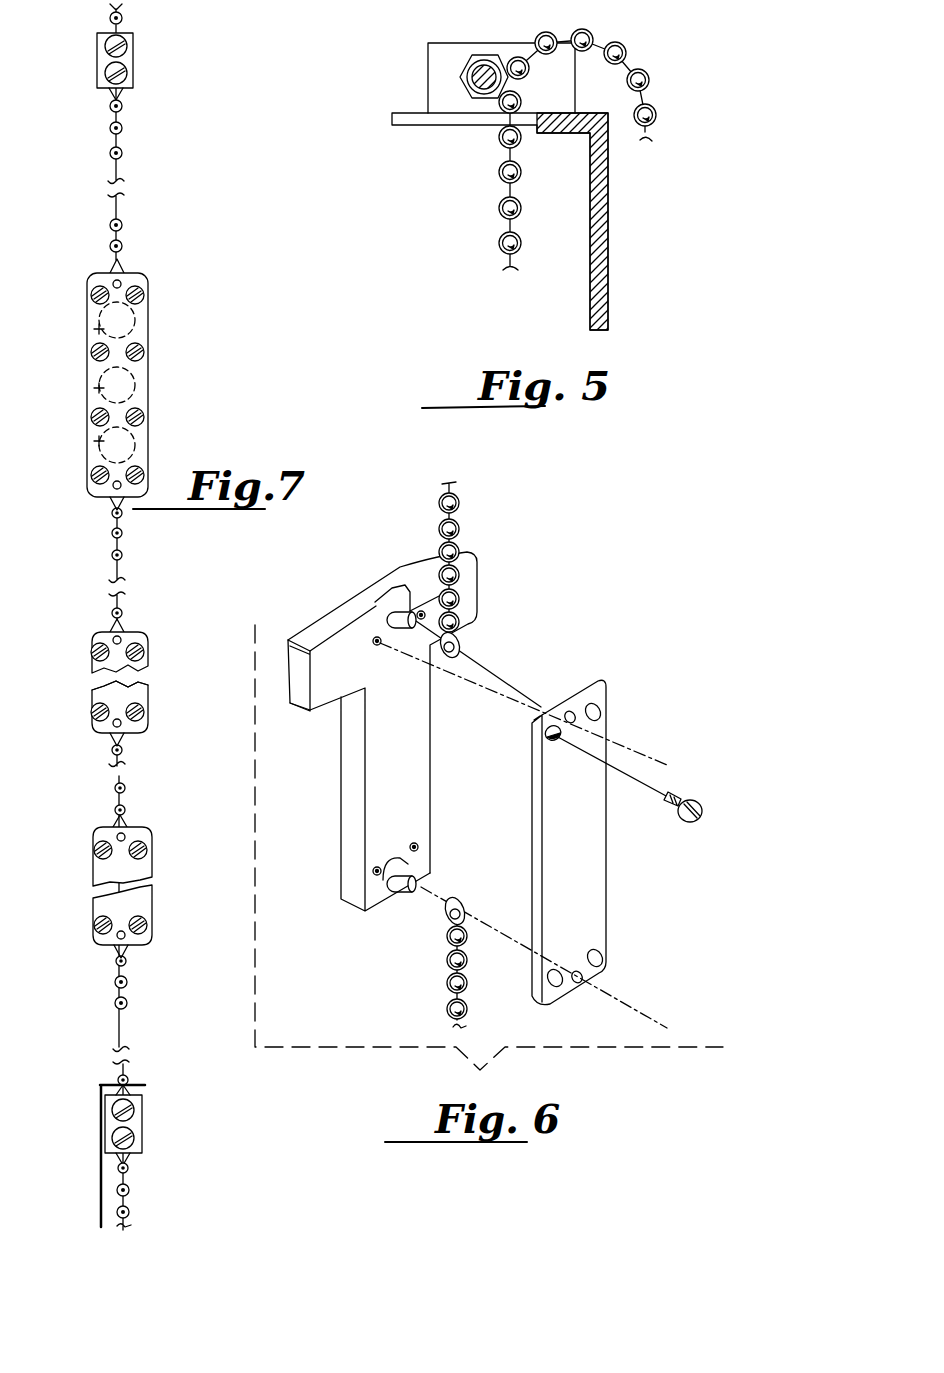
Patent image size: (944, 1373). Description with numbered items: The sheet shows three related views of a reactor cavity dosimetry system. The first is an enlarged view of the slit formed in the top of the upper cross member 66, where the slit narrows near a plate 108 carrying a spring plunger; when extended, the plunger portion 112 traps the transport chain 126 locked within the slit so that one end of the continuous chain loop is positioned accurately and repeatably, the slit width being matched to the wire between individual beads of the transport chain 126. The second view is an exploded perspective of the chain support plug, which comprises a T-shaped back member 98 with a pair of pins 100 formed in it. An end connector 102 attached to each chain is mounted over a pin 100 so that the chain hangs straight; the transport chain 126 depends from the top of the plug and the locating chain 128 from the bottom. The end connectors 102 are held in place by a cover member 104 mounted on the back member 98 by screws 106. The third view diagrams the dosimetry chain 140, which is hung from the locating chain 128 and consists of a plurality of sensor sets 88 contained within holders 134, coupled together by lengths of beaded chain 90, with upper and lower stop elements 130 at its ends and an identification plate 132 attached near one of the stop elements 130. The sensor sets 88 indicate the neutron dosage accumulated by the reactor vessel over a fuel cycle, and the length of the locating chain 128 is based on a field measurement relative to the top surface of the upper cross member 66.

In FIG. 5, the upper cross member 66 is at (601, 277).
In FIG. 7, the sensor sets 88 is at (88, 435).
In FIG. 7, the beaded chain 90 is at (122, 225).
In FIG. 6, the T-shaped back member 98 is at (337, 681).
In FIG. 6, the pins 100 is at (392, 610).
In FIG. 6, the end connector 102 is at (462, 642).
In FIG. 6, the cover member 104 is at (580, 872).
In FIG. 6, the screws 106 is at (681, 803).
In FIG. 5, the plate 108 is at (448, 101).
In FIG. 5, the plunger portion 112 is at (468, 69).
In FIG. 5, the transport chain 126 is at (500, 210).
In FIG. 6, the transport chain 126 is at (457, 535).
In FIG. 7, the transport chain 126 is at (129, 1191).
In FIG. 6, the locating chain 128 is at (449, 990).
In FIG. 7, the locating chain 128 is at (122, 18).
In FIG. 7, the stop elements 130 is at (100, 60).
In FIG. 7, the identification plate 132 is at (98, 1178).
In FIG. 7, the holders 134 is at (142, 378).
In FIG. 7, the dosimetry chain 140 is at (87, 701).